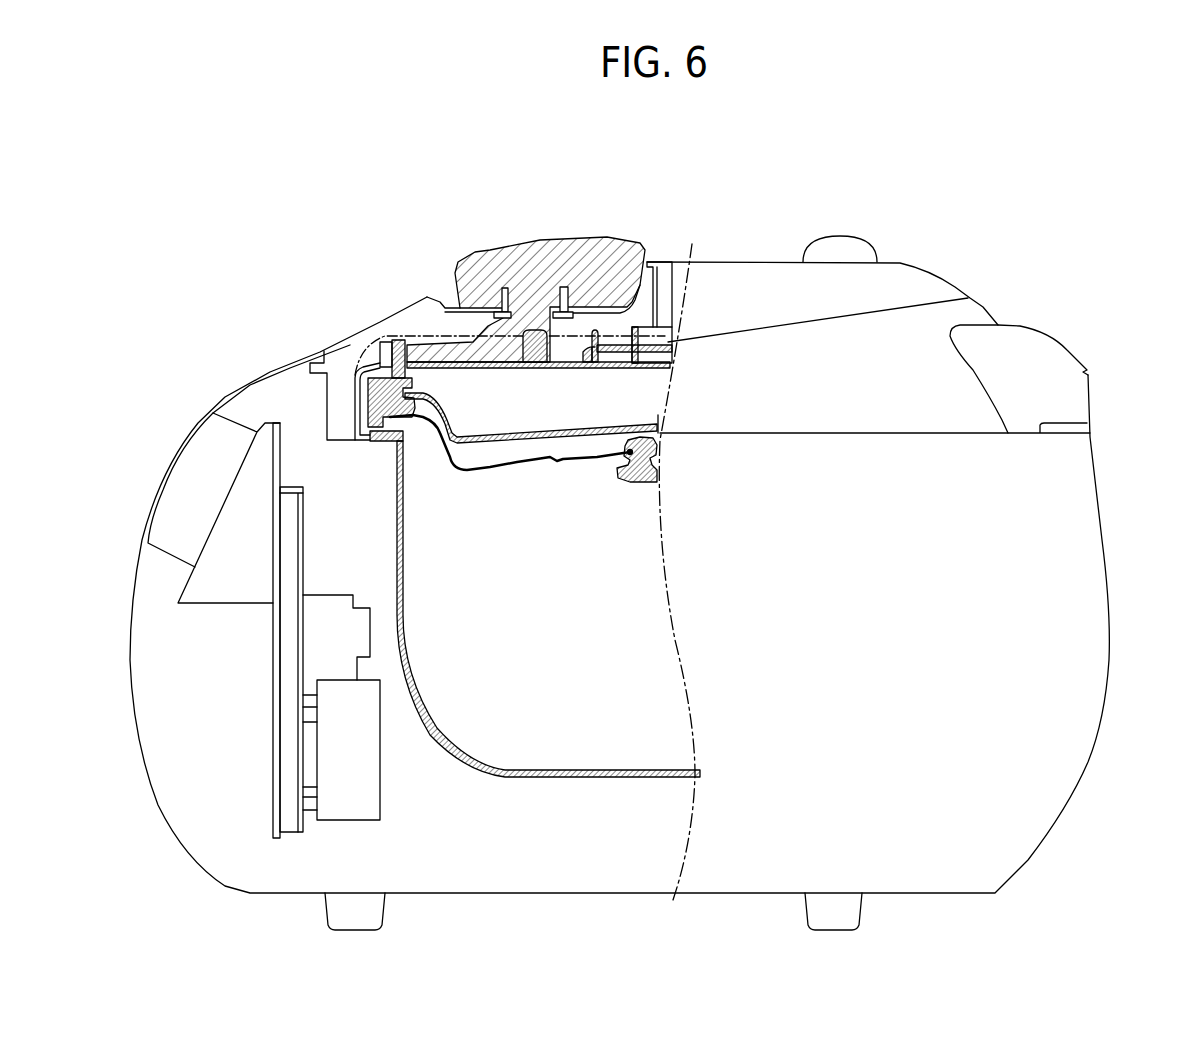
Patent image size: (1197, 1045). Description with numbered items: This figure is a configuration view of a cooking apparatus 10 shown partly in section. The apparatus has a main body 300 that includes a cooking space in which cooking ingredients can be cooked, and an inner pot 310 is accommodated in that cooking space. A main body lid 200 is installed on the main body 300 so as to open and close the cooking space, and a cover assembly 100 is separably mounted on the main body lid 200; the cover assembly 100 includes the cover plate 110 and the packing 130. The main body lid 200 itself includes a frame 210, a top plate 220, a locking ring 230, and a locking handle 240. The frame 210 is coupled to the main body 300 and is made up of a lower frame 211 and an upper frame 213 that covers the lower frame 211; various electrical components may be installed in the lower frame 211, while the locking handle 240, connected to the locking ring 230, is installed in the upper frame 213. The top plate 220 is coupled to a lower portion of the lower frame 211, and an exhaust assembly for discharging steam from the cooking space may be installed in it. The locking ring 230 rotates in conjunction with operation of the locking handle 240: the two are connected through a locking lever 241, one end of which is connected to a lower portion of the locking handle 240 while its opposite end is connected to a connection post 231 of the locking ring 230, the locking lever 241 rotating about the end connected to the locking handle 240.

The cooking apparatus 10 is at (272, 191).
The cover assembly 100 is at (511, 507).
The cover plate 110 is at (528, 465).
The packing 130 is at (367, 365).
The main body lid 200 is at (856, 208).
The frame 210 is at (753, 167).
The lower frame 211 is at (636, 262).
The upper frame 213 is at (737, 292).
The top plate 220 is at (583, 437).
The locking ring 230 is at (363, 413).
The connection post 231 is at (396, 340).
The locking handle 240 is at (527, 243).
The locking lever 241 is at (446, 355).
The main body 300 is at (1093, 490).
The inner pot 310 is at (583, 775).